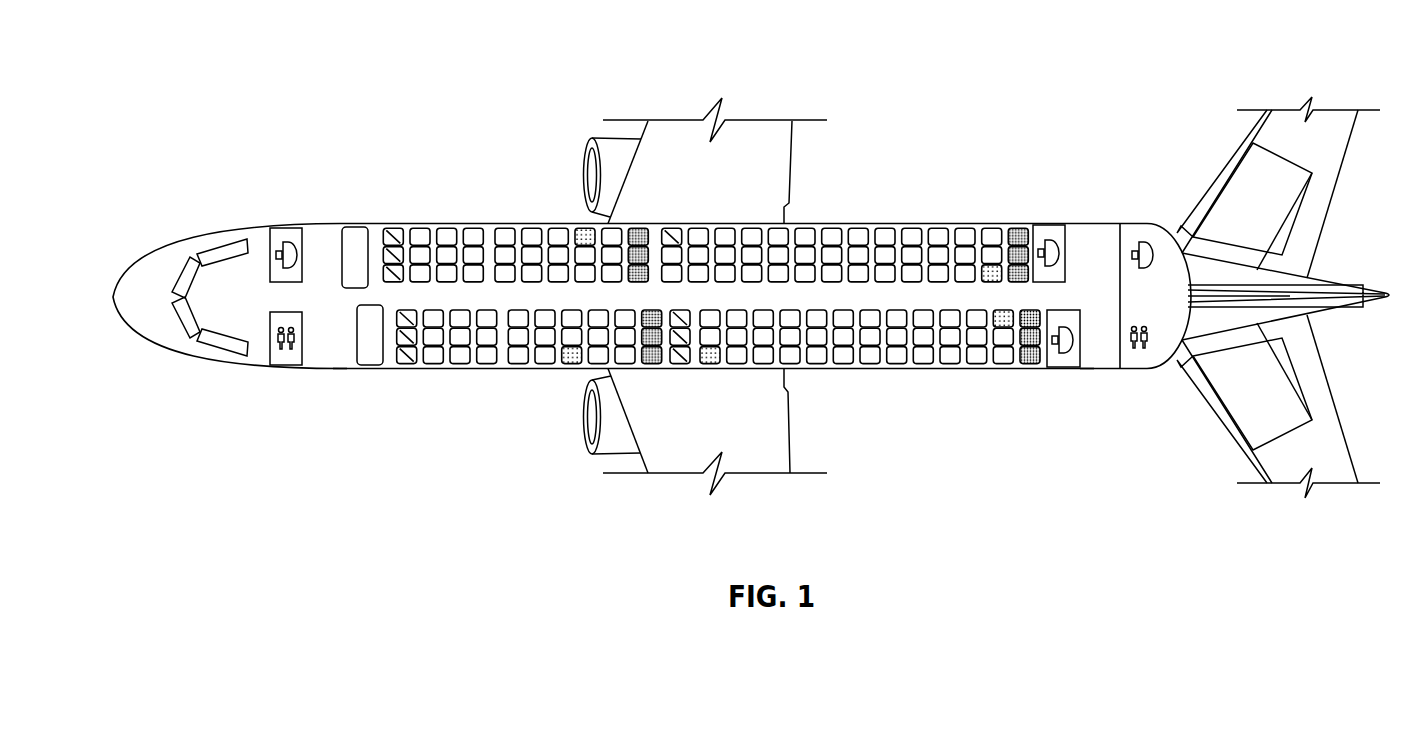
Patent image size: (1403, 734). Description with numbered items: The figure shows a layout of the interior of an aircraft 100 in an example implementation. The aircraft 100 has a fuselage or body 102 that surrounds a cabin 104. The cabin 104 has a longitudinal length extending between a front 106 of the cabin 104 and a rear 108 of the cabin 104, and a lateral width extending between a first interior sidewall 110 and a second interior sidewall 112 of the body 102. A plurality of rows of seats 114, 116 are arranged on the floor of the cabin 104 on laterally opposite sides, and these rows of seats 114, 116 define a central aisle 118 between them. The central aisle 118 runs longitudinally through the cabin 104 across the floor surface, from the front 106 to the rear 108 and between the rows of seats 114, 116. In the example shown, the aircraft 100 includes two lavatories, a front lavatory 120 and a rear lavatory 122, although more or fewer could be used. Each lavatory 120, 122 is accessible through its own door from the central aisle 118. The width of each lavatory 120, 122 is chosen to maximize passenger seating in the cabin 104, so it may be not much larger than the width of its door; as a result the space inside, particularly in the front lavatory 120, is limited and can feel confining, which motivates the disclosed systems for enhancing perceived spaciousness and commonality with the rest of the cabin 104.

The aircraft 100 is at (283, 111).
The fuselage or body 102 is at (340, 215).
The cabin 104 is at (304, 295).
The front of the cabin 106 is at (315, 356).
The rear of the cabin 108 is at (1087, 372).
The first interior sidewall 110 is at (337, 366).
The second interior sidewall 112 is at (372, 236).
The rows of seats 114 is at (372, 255).
The rows of seats 116 is at (378, 322).
The central aisle 118 is at (474, 299).
The front lavatory 120 is at (273, 354).
The rear lavatory 122 is at (1145, 352).